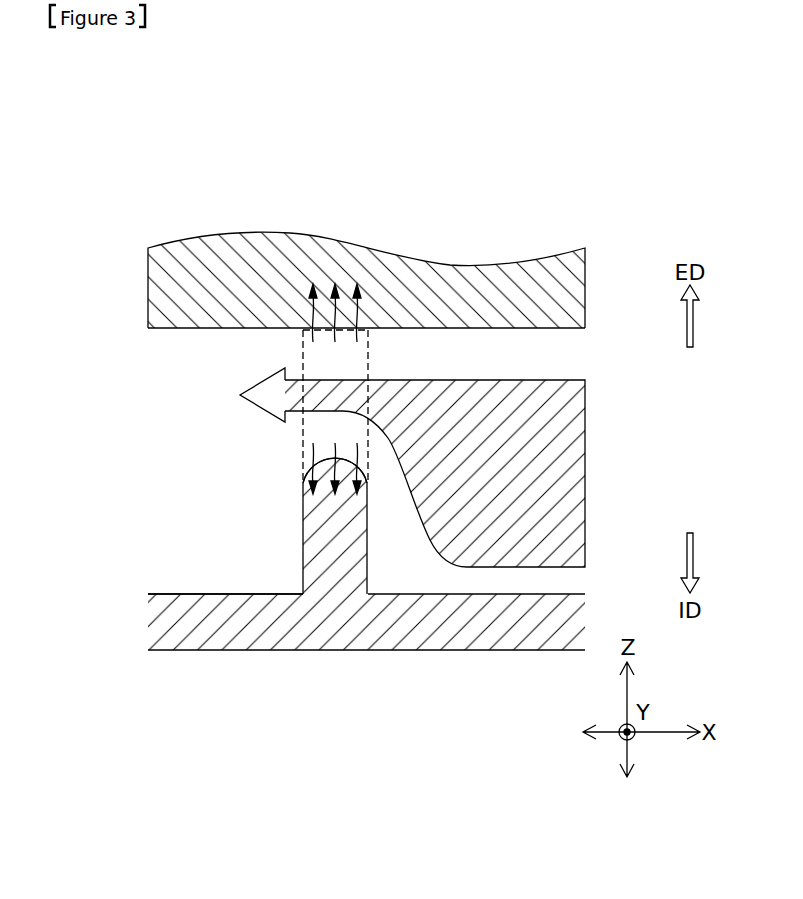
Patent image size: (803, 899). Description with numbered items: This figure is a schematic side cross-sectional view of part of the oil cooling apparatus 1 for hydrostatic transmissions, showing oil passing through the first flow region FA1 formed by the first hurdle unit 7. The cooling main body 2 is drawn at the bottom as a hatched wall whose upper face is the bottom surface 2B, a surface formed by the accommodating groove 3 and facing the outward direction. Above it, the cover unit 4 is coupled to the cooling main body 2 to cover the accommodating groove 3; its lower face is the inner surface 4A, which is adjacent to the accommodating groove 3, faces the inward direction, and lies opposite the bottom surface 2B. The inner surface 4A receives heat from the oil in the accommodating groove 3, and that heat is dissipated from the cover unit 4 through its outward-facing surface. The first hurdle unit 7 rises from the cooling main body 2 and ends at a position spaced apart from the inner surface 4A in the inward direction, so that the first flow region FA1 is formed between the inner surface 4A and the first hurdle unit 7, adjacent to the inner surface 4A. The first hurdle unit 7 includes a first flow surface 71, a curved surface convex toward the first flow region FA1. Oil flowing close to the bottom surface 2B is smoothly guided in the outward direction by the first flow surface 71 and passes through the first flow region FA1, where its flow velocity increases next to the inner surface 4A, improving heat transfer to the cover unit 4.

The oil cooling apparatus 1 is at (194, 114).
The cooling main body 2 is at (234, 732).
The bottom surface 2B is at (255, 590).
The accommodating groove 3 is at (180, 525).
The cover unit 4 is at (487, 184).
The inner surface 4A is at (441, 328).
The first hurdle unit 7 is at (343, 540).
The first flow surface 71 is at (342, 440).
The first flow region FA1 is at (329, 362).